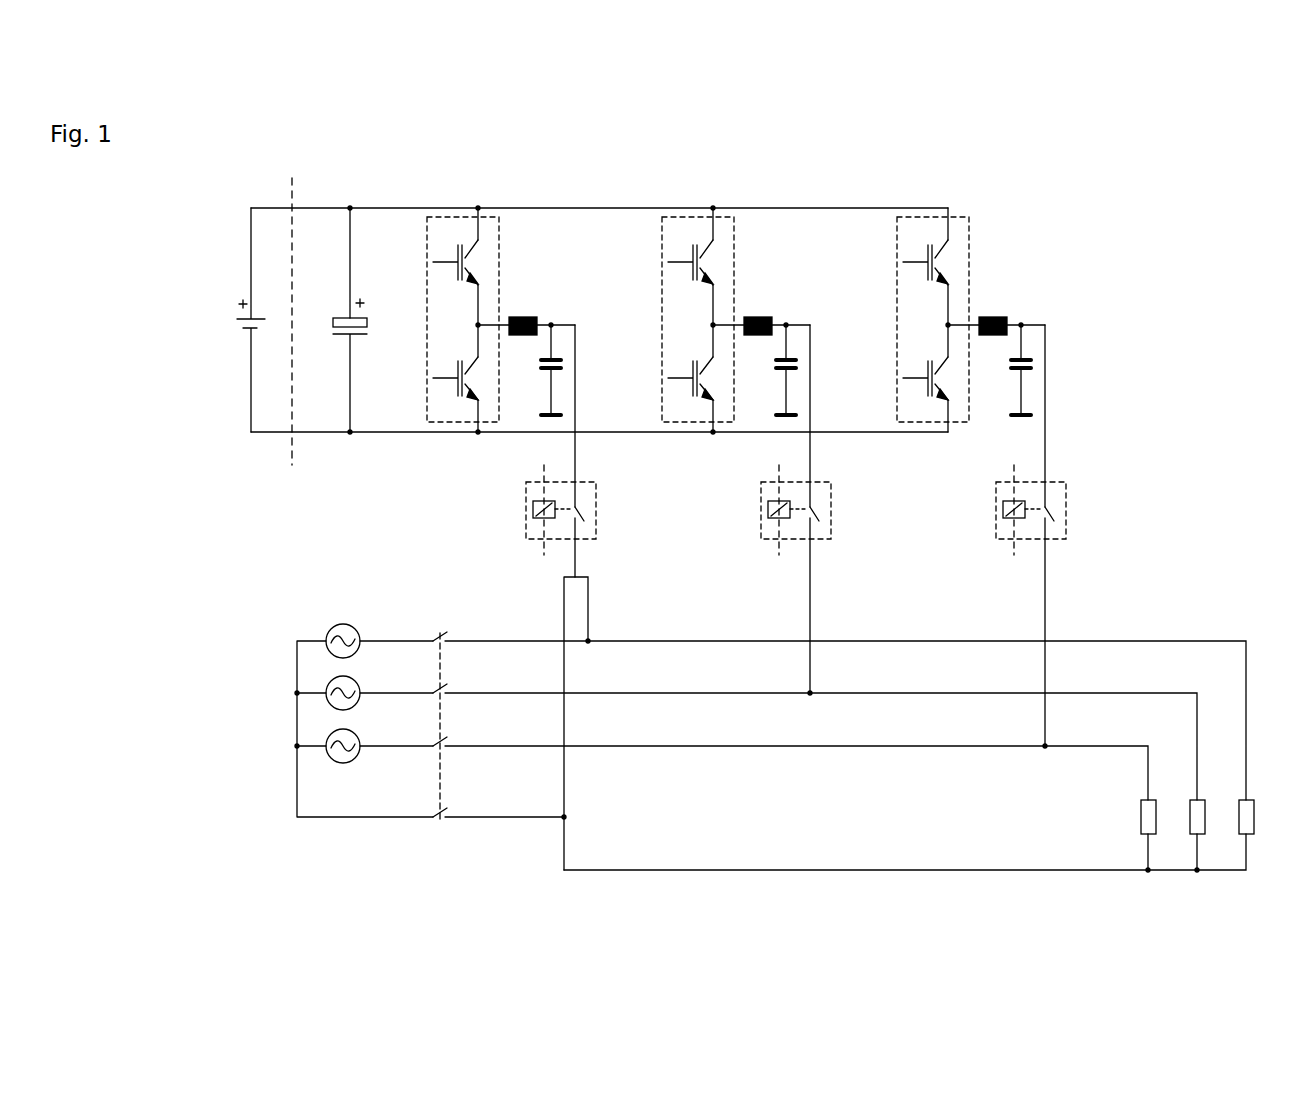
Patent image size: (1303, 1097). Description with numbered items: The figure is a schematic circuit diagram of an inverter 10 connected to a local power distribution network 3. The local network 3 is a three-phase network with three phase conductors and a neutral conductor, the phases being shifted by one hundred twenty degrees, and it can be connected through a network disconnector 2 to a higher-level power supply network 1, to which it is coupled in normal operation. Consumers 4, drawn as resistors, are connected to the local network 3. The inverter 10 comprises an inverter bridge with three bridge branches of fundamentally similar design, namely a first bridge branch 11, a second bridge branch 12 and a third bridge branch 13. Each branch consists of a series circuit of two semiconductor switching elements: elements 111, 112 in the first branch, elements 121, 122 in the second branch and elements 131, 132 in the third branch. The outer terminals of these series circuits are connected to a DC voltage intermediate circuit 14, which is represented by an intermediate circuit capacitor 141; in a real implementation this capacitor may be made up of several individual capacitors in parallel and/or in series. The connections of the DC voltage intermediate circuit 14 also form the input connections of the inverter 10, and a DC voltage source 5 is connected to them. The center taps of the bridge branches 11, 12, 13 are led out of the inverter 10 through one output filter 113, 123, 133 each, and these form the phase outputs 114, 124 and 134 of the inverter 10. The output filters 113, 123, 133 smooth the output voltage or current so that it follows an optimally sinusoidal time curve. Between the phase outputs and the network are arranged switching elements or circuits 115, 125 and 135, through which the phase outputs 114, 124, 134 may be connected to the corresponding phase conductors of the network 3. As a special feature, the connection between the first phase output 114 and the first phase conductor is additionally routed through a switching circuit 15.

The higher-level power supply network 1 is at (321, 828).
The network disconnector 2 is at (440, 822).
The local power distribution network 3 is at (1135, 637).
The consumers 4 is at (1252, 816).
The DC voltage source 5 is at (246, 328).
The inverter 10 is at (882, 186).
The first bridge branch 11 is at (488, 217).
The second bridge branch 12 is at (734, 218).
The third bridge branch 13 is at (960, 218).
The DC voltage intermediate circuit 14 is at (383, 205).
The switching circuit 15 is at (577, 580).
The semiconductor switching element 111 is at (468, 272).
The semiconductor switching element 112 is at (460, 380).
The output filter 113 is at (562, 355).
The first phase output 114 is at (578, 447).
The switching element 115 is at (525, 496).
The semiconductor switching element 121 is at (700, 272).
The semiconductor switching element 122 is at (692, 384).
The output filter 123 is at (792, 355).
The phase output 124 is at (813, 447).
The switching element 125 is at (831, 518).
The semiconductor switching element 131 is at (932, 270).
The semiconductor switching element 132 is at (928, 373).
The output filter 133 is at (1027, 355).
The phase output 134 is at (1048, 452).
The switching element 135 is at (1066, 510).
The intermediate circuit capacitor 141 is at (366, 316).